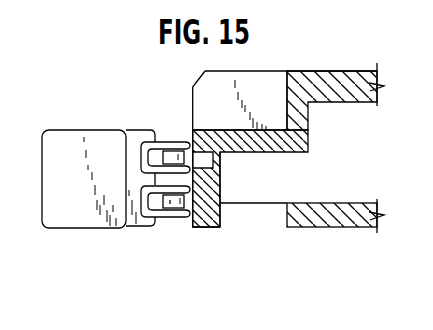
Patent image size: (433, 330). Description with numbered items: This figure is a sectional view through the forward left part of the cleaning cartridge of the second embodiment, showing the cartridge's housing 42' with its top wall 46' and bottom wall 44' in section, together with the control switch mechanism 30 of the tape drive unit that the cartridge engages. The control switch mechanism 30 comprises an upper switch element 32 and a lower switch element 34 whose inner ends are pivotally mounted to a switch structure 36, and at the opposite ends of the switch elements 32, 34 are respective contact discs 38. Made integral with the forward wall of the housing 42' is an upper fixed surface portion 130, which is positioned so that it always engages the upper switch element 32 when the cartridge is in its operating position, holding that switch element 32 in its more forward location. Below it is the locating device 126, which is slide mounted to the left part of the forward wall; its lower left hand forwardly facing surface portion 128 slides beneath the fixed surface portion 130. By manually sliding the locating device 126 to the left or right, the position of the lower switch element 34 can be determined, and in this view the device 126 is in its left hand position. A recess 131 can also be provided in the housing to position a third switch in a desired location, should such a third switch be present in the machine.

The control switch mechanism 30 is at (83, 122).
The switch structure 36 is at (73, 137).
The upper switch element 32 is at (163, 142).
The lower switch element 34 is at (158, 224).
The contact disc 38 is at (177, 160).
The upper fixed surface portion 130 is at (178, 150).
The lower left hand forwardly facing surface portion 128 is at (186, 216).
The recess 131 is at (203, 98).
The housing 42' is at (335, 69).
The top wall 46' is at (332, 51).
The bottom wall 44' is at (288, 207).
The locating device 126 is at (228, 185).